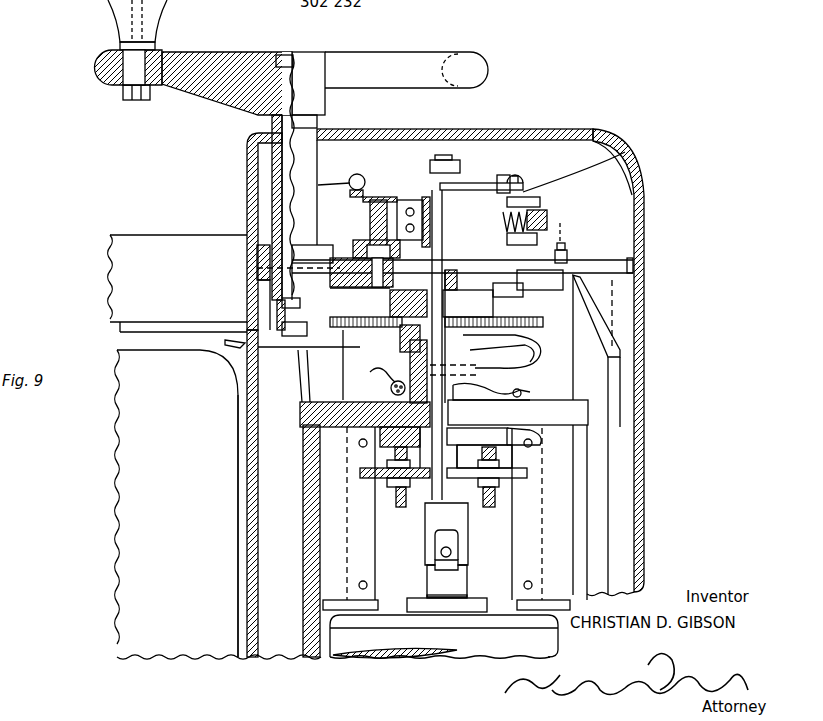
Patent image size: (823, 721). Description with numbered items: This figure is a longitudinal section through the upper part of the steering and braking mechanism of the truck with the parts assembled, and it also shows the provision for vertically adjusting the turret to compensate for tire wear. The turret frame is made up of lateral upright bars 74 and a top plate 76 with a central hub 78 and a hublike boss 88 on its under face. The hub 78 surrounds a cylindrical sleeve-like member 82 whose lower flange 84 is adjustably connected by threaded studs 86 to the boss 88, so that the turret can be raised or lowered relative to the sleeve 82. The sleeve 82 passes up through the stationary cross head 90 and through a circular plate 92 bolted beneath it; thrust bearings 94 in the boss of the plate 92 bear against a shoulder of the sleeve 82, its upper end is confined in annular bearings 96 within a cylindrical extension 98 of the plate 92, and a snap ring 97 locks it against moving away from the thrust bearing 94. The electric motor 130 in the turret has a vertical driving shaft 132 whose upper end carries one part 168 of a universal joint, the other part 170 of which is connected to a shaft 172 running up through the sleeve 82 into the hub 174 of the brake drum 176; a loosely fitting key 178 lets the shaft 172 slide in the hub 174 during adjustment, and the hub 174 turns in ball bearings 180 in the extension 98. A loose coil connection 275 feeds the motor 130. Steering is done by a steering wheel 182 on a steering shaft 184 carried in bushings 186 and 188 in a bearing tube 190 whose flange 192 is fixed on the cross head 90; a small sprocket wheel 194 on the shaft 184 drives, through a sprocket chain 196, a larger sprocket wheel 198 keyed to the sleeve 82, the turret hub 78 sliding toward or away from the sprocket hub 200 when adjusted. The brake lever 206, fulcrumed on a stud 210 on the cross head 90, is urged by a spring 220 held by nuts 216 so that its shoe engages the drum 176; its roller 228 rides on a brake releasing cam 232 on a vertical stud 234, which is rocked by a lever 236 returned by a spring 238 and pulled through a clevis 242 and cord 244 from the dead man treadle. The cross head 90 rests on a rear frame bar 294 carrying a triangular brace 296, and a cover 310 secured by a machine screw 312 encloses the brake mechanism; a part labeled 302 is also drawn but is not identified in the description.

The lateral upright bars 74 is at (307, 561).
The top plate 76 is at (302, 423).
The central hub 78 is at (520, 352).
The cylindrical sleeve-like member 82 is at (391, 390).
The flange 84 is at (363, 473).
The threaded rods or studs 86 is at (398, 497).
The hublike boss 88 is at (500, 437).
The cross head 90 is at (260, 267).
The circular plate 92 is at (575, 275).
The thrust bearings 94 is at (400, 302).
The annular bearings 96 is at (400, 247).
The snap ring 97 is at (427, 223).
The cylindrical extension 98 is at (412, 230).
The electric motor 130 is at (433, 640).
The driving shaft 132 is at (428, 597).
The universal joint part 168 is at (433, 575).
The universal joint part 170 is at (428, 530).
The shaft 172 is at (437, 492).
The hub 174 is at (458, 272).
The brake drum 176 is at (375, 218).
The key 178 is at (462, 180).
The ball bearings 180 is at (387, 223).
The steering wheel 182 is at (218, 60).
The steering shaft 184 is at (285, 170).
The bushing 186 is at (257, 117).
The bushing 188 is at (273, 285).
The bearing tube 190 is at (258, 176).
The flange 192 is at (260, 253).
The small sprocket wheel 194 is at (280, 332).
The sprocket chain 196 is at (402, 333).
The larger sprocket wheel 198 is at (410, 350).
The hub 200 is at (410, 365).
The brake lever 206 is at (535, 240).
The stud 210 is at (510, 193).
The nuts 216 is at (523, 205).
The springs 220 is at (537, 240).
The roller 228 is at (490, 227).
The brake releasing cam 232 is at (460, 230).
The vertical stud 234 is at (447, 157).
The lever 236 is at (492, 181).
The spring 238 is at (532, 175).
The clevis 242 is at (356, 175).
The cord 244 is at (318, 187).
The loose coil connection 275 is at (530, 360).
The rear frame bar 294 is at (627, 553).
The triangular brace 296 is at (600, 293).
The element 302 is at (314, 5).
The cover 310 is at (603, 135).
The machine screw 312 is at (573, 253).